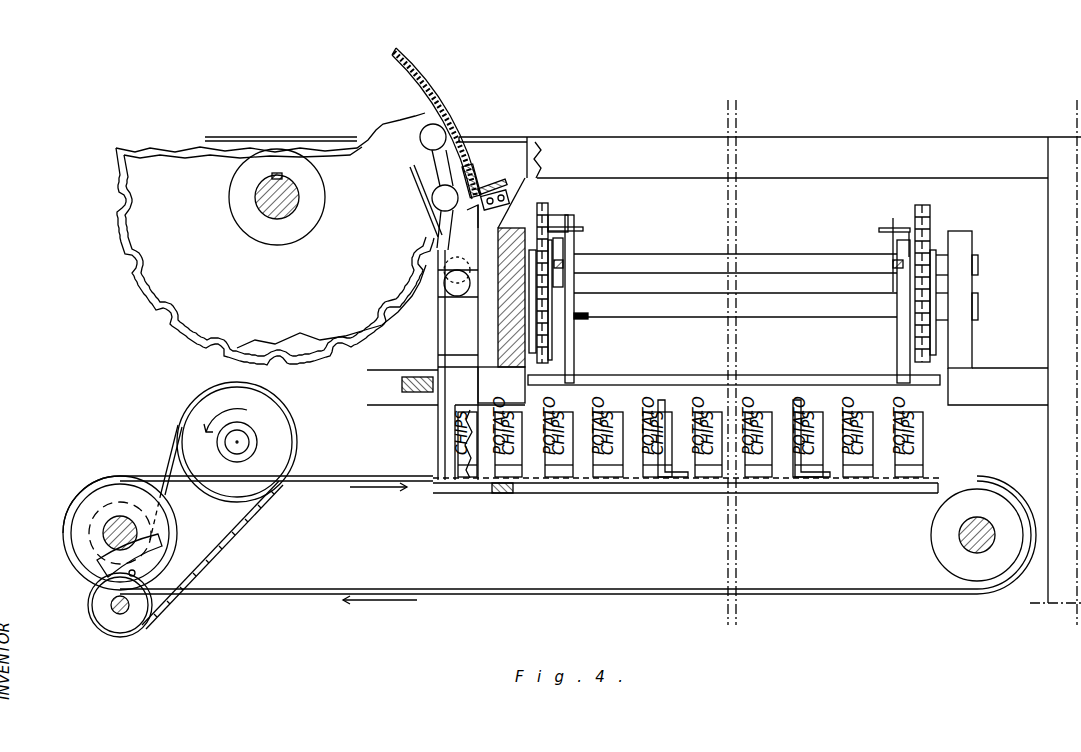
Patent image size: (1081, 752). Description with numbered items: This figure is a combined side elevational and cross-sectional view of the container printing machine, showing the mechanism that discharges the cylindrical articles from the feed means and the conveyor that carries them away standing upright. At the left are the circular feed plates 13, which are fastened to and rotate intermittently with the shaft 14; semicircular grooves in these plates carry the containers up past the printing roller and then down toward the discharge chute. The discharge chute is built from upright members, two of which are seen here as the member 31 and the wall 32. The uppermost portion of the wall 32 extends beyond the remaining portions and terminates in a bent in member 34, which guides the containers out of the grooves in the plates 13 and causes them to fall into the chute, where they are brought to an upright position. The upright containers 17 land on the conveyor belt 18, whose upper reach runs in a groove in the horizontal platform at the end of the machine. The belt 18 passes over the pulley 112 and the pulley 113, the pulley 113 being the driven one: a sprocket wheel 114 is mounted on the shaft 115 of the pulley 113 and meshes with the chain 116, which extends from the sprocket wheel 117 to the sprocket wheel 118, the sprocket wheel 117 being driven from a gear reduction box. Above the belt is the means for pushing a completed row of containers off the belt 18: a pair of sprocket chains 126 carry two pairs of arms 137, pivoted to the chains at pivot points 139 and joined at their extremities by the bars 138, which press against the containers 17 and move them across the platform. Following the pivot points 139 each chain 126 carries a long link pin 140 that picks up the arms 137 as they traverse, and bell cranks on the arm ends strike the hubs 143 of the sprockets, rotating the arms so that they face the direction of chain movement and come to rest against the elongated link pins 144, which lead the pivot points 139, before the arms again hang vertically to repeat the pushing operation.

The feed plates 13 is at (138, 288).
The shaft 14 is at (280, 215).
The containers 17 is at (424, 138).
The conveyor belt 18 is at (437, 486).
The upright member 31 is at (482, 229).
The upright member 32 is at (436, 325).
The bent in member 34 is at (413, 198).
The pulley 112 is at (938, 530).
The pulley 113 is at (125, 487).
The sprocket wheel 114 is at (150, 552).
The shaft 115 is at (110, 533).
The chain 116 is at (177, 442).
The sprocket wheel 117 is at (283, 433).
The sprocket wheel 118 is at (131, 618).
The sprocket chains 126 is at (543, 208).
The arms 137 is at (572, 343).
The bars 138 is at (791, 378).
The pivot points 139 is at (565, 258).
The long link pin 140 is at (575, 316).
The hubs 143 is at (563, 219).
The elongated link pins 144 is at (578, 230).